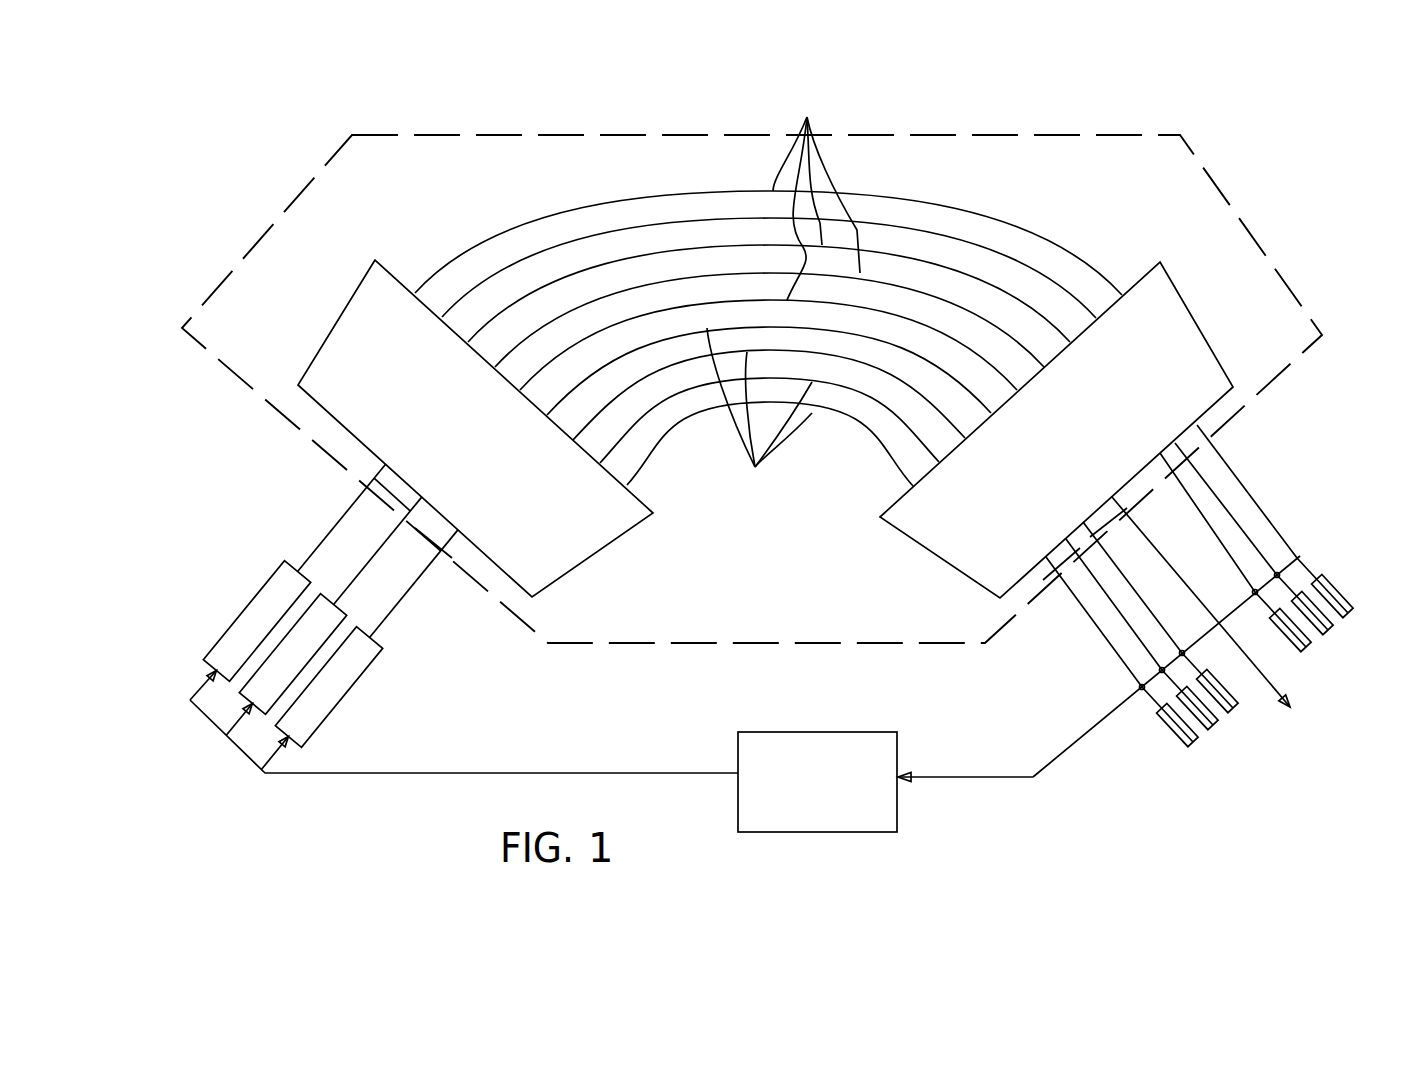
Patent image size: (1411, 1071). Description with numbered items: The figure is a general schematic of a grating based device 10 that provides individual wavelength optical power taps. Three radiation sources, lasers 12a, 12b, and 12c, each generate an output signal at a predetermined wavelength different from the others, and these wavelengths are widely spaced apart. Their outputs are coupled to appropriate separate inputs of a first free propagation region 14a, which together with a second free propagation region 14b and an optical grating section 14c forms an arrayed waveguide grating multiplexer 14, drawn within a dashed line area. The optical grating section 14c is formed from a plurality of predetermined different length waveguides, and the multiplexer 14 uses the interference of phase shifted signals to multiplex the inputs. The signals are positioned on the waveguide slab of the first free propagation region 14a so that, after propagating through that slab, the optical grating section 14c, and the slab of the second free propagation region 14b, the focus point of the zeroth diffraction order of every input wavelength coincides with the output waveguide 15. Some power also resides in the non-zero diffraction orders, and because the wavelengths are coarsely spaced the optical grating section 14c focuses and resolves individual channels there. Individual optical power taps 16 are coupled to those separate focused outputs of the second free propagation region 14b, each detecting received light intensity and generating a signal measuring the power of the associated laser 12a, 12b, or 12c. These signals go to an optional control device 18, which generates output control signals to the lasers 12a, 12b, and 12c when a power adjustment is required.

The grating based device 10 is at (487, 101).
The laser 12a is at (252, 592).
The laser 12b is at (330, 597).
The laser 12c is at (343, 698).
The arrayed waveguide grating multiplexer 14 is at (623, 137).
The first free propagation region 14a is at (335, 323).
The second free propagation region 14b is at (1207, 330).
The optical grating section 14c is at (783, 291).
The output waveguide 15 is at (1182, 575).
The individual wavelength optical power tap 16 is at (1233, 708).
The control device 18 is at (843, 732).